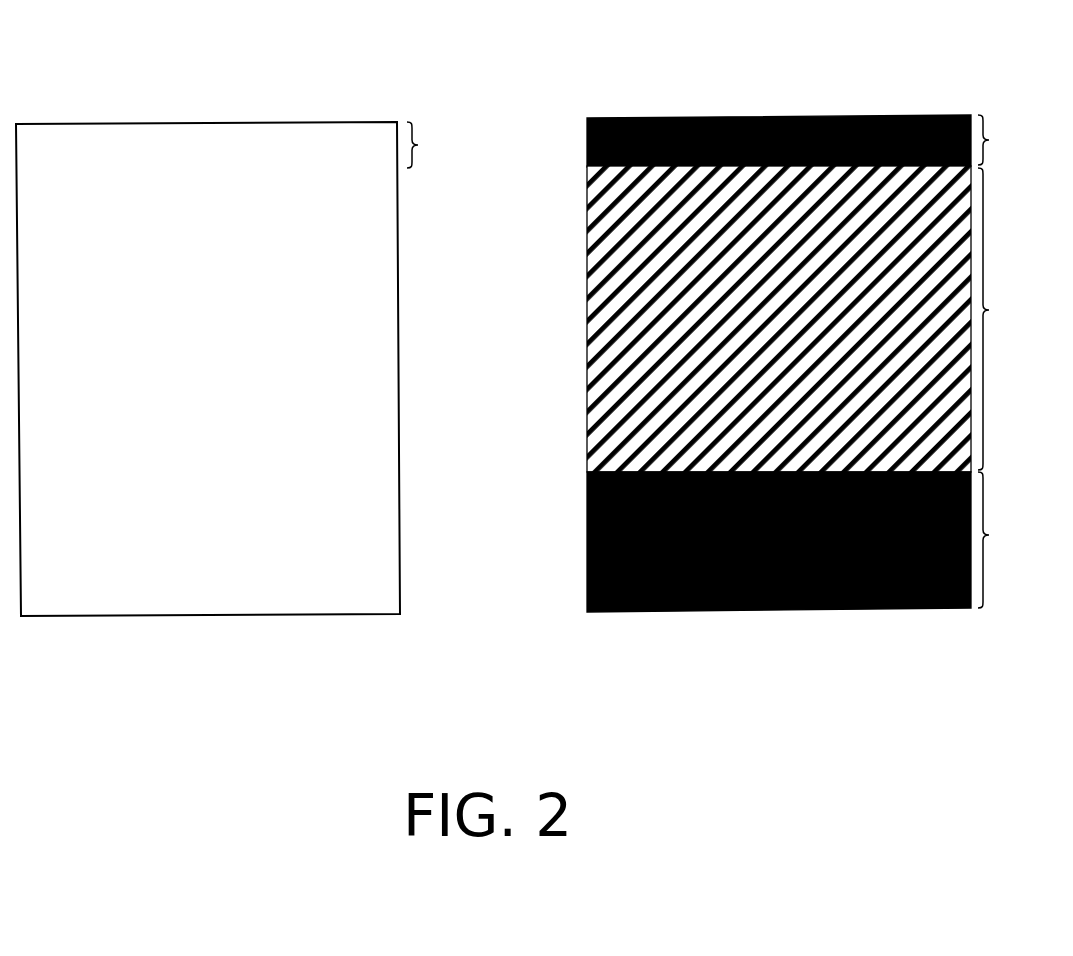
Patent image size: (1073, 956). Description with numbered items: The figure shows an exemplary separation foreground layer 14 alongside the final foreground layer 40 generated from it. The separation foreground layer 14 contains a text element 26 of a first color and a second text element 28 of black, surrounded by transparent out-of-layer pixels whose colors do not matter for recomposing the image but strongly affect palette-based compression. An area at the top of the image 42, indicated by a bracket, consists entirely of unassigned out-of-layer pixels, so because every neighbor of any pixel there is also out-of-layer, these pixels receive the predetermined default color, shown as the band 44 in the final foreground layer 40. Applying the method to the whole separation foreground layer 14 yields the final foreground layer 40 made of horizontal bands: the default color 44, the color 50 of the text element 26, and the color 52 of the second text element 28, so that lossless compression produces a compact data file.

The separation foreground layer 14 is at (322, 96).
The text element 26 is at (355, 218).
The text element 28 is at (357, 475).
The final foreground layer 40 is at (809, 316).
The area at the top of the image 42 is at (432, 145).
The band of the default color 44 is at (809, 141).
The band of the color of the text element 50 is at (809, 319).
The band of the color of the second text element 52 is at (809, 542).